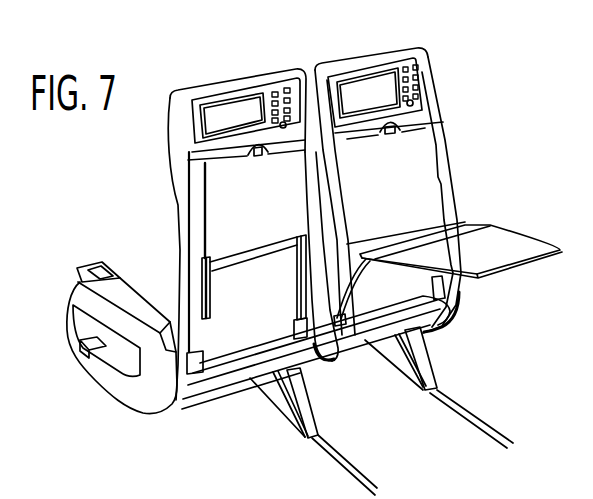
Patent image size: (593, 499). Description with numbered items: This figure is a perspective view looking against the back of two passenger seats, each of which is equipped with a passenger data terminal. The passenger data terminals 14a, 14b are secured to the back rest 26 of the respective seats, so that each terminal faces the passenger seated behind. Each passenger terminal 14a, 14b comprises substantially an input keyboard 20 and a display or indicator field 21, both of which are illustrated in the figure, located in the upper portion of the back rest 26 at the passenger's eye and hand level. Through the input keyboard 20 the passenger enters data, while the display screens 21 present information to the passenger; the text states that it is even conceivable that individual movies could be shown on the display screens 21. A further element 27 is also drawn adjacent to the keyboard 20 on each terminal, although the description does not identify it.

The passenger terminal 14a is at (278, 88).
The passenger data terminal 14b is at (403, 66).
The input keyboard 20 is at (296, 88).
The display or indicator field 21 is at (210, 110).
The back rest 26 is at (183, 203).
The headphone jack 27 is at (281, 126).